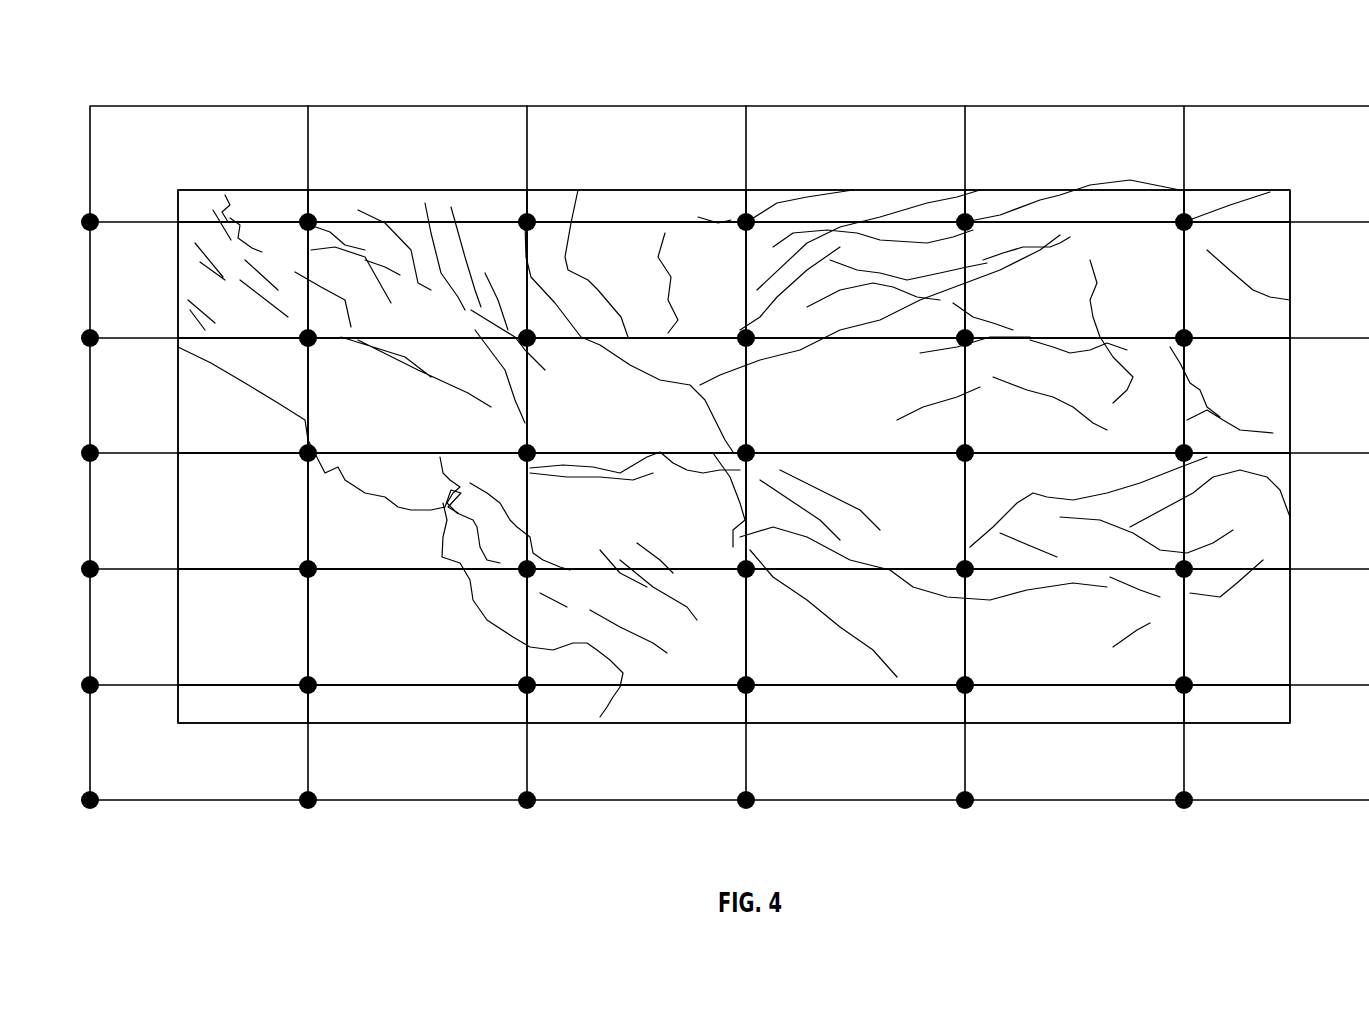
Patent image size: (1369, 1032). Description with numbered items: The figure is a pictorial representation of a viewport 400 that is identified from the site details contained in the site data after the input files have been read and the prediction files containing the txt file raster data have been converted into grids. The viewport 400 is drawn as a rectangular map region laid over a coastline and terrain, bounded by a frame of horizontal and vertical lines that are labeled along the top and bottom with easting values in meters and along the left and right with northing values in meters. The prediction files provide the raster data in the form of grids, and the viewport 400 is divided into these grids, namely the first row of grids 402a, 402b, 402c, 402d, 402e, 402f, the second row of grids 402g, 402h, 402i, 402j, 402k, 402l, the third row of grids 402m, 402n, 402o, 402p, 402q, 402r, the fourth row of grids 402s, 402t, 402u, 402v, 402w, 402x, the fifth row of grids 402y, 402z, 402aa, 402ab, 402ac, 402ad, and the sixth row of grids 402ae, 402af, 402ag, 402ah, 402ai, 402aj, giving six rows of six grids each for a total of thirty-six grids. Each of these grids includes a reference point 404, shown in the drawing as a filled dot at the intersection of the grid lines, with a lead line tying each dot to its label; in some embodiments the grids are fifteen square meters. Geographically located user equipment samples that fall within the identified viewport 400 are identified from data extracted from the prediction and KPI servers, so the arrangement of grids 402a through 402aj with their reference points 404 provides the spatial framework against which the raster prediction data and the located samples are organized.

The viewport 400 is at (262, 76).
The grid 402a is at (243, 205).
The grid 402b is at (417, 205).
The grid 402c is at (636, 205).
The grid 402d is at (855, 205).
The grid 402e is at (1074, 205).
The grid 402f is at (1237, 205).
The grid 402g is at (243, 280).
The grid 402h is at (417, 280).
The grid 402i is at (636, 280).
The grid 402j is at (855, 280).
The grid 402k is at (1074, 280).
The grid 402l is at (1237, 280).
The grid 402m is at (243, 395).
The grid 402n is at (417, 395).
The grid 402o is at (636, 395).
The grid 402p is at (855, 395).
The grid 402q is at (1074, 395).
The grid 402r is at (1237, 395).
The grid 402s is at (243, 511).
The grid 402t is at (417, 511).
The grid 402u is at (636, 511).
The grid 402v is at (855, 511).
The grid 402w is at (1074, 511).
The grid 402x is at (1237, 511).
The grid 402y is at (243, 627).
The grid 402z is at (417, 627).
The grid 402aa is at (636, 627).
The grid 402ab is at (855, 627).
The grid 402ac is at (1074, 627).
The grid 402ad is at (1208, 668).
The grid 402ae is at (243, 704).
The grid 402af is at (417, 704).
The grid 402ag is at (636, 704).
The grid 402ah is at (855, 704).
The grid 402ai is at (1074, 704).
The grid 402aj is at (1237, 704).
The reference point 404 is at (90, 222).